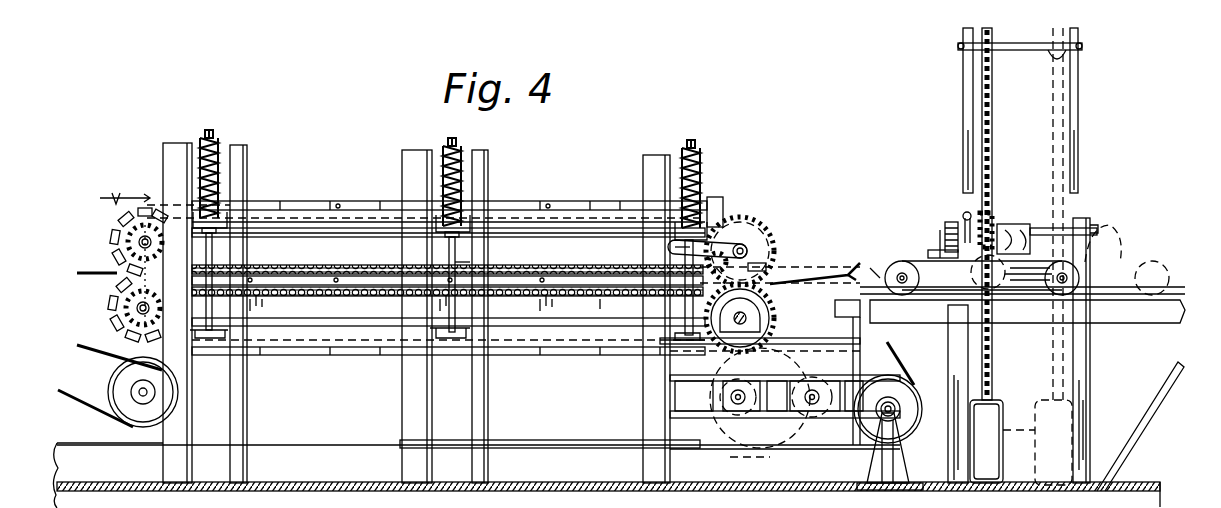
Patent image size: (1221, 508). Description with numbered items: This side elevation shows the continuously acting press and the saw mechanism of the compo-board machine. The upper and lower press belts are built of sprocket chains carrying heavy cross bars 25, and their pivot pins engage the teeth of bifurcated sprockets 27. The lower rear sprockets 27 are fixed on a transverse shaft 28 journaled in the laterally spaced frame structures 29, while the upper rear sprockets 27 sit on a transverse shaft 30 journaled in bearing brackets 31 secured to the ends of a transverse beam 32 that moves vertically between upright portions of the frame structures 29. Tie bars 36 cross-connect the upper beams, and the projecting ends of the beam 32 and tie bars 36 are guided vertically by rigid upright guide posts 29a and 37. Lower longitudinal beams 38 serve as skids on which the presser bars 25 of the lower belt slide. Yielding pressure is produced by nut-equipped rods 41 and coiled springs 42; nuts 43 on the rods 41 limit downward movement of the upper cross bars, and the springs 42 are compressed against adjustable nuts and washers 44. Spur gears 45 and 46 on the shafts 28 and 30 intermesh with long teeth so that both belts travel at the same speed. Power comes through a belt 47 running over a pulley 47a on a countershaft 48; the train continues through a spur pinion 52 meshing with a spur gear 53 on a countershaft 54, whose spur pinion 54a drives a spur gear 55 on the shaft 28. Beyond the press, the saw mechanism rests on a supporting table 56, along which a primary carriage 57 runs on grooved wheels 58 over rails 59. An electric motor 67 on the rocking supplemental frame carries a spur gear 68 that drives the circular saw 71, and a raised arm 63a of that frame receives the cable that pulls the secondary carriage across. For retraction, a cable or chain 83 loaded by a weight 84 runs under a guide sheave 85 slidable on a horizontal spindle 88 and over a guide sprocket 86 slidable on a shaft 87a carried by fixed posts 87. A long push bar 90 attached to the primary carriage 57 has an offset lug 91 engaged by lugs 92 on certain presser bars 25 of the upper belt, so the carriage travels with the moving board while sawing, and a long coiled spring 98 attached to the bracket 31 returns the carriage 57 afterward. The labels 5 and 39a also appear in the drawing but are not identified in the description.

The articles 5 is at (126, 188).
The cross bars 25 is at (318, 202).
The sprockets 27 is at (120, 240).
The transverse shaft 28 is at (762, 322).
The frame structures 29 is at (300, 265).
The upright guide posts 29a is at (648, 173).
The transverse shaft 30 is at (762, 248).
The bearing brackets 31 is at (744, 240).
The transverse beam 32 is at (680, 240).
The tie bars 36 is at (232, 214).
The upright guide posts 37 is at (168, 155).
The longitudinal beams 38 is at (538, 312).
The clamp 39a is at (218, 336).
The nut-equipped rods 41 is at (455, 263).
The coiled springs 42 is at (463, 178).
The nuts 43 is at (205, 232).
The nuts and washers 44 is at (214, 143).
The spur gear 45 is at (762, 314).
The spur gear 46 is at (766, 266).
The power-driven belt 47 is at (897, 372).
The pulley 47a is at (905, 422).
The countershaft 48 is at (884, 412).
The spur pinion 52 is at (815, 406).
The spur gear 53 is at (762, 455).
The countershaft 54 is at (740, 404).
The spur pinion 54a is at (724, 410).
The spur gear 55 is at (834, 372).
The supporting table 56 is at (1115, 310).
The primary carriage 57 is at (1160, 268).
The grooved wheels 58 is at (1066, 275).
The rails 59 is at (1031, 296).
The raised arm 63a is at (995, 206).
The electric motor 67 is at (1013, 236).
The spur gear 68 is at (955, 222).
The circular saw 71 is at (940, 232).
The cable or chain 83 is at (992, 172).
The weight 84 is at (1021, 442).
The guide sheave 85 is at (994, 226).
The guide sprocket 86 is at (988, 54).
The fixed posts 87 is at (966, 135).
The shaft 87a is at (1067, 62).
The horizontal spindle 88 is at (1062, 230).
The push bar 90 is at (810, 285).
The offset lug 91 is at (686, 300).
The lugs 92 is at (340, 206).
The coiled spring 98 is at (778, 276).